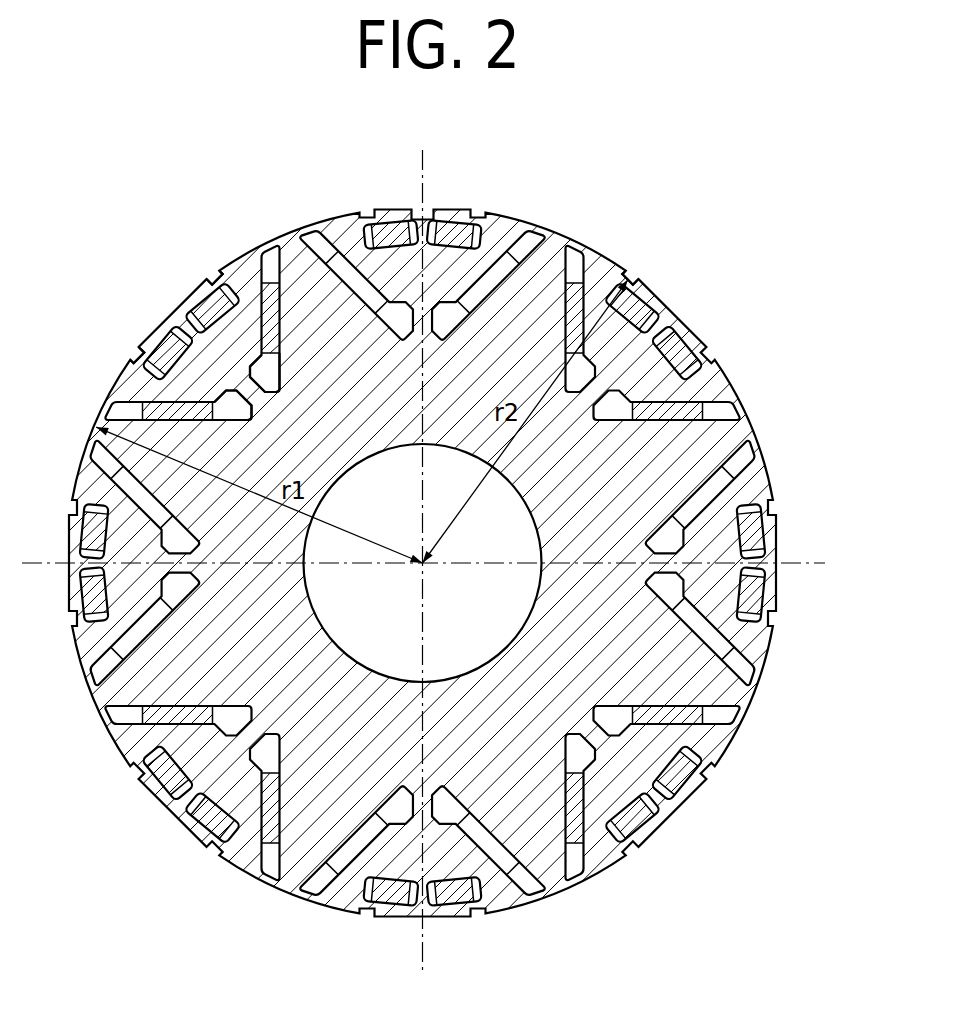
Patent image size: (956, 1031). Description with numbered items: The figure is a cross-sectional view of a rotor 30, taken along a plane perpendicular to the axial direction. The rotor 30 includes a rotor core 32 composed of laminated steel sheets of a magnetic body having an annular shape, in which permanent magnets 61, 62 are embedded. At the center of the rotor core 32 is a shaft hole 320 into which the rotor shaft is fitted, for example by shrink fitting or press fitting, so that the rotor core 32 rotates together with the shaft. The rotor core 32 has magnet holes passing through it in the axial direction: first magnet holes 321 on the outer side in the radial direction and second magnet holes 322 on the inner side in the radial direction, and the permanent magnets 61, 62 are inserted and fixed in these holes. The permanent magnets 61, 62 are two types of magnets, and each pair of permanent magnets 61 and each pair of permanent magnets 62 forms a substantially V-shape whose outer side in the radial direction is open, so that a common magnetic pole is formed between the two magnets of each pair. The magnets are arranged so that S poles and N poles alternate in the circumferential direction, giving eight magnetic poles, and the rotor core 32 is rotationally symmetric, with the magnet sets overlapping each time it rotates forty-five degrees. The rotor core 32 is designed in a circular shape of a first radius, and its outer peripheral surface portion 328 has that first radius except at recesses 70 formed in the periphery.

The rotor 30 is at (478, 505).
The rotor core 32 is at (478, 505).
The shaft hole 320 is at (500, 472).
The first magnet hole 321 is at (218, 287).
The second magnet hole 322 is at (277, 366).
The outer peripheral surface portion 328 is at (745, 413).
The permanent magnet 61 is at (207, 297).
The permanent magnet 62 is at (276, 320).
The recess 70 is at (634, 272).